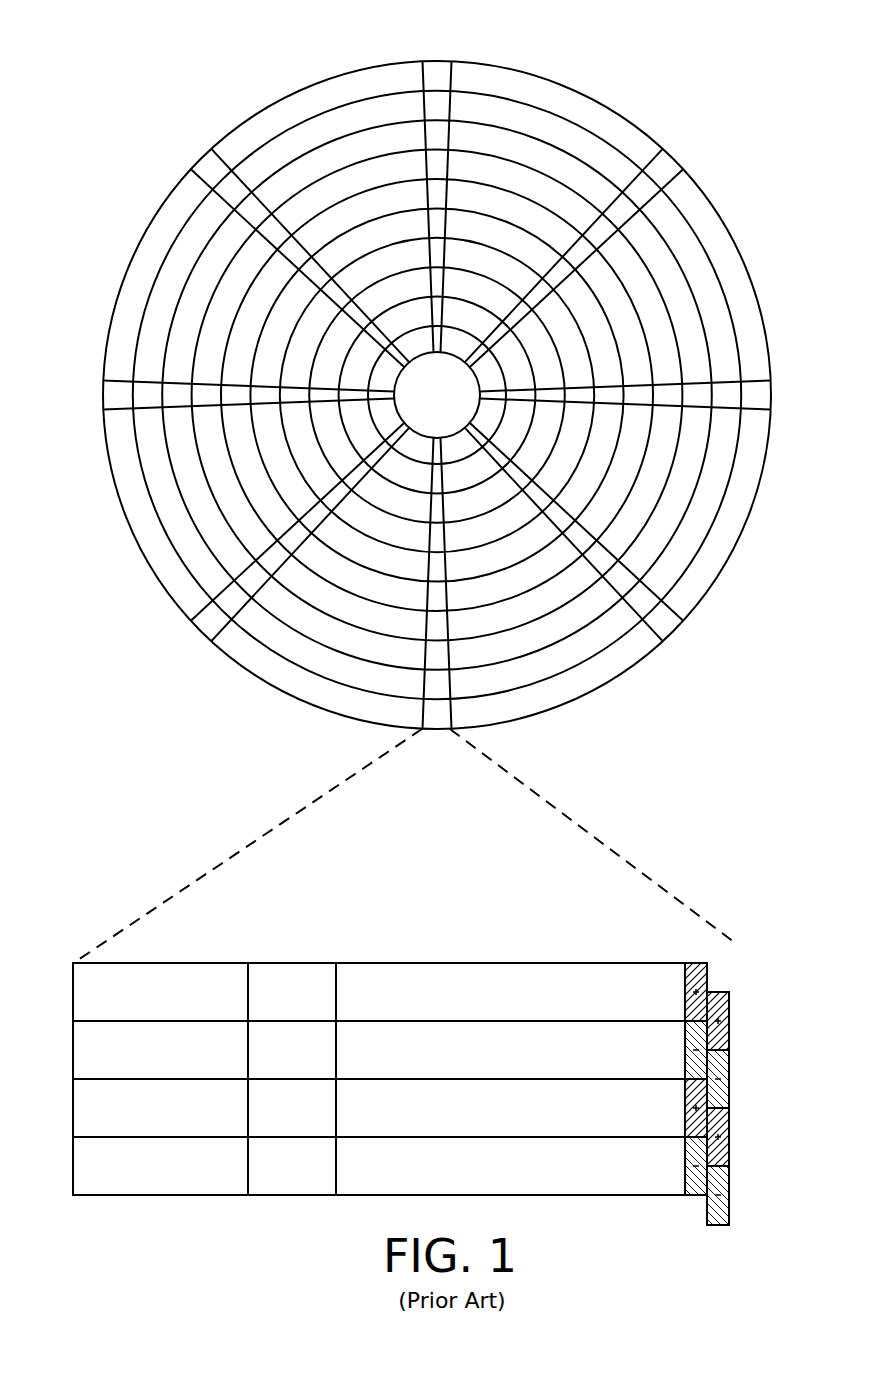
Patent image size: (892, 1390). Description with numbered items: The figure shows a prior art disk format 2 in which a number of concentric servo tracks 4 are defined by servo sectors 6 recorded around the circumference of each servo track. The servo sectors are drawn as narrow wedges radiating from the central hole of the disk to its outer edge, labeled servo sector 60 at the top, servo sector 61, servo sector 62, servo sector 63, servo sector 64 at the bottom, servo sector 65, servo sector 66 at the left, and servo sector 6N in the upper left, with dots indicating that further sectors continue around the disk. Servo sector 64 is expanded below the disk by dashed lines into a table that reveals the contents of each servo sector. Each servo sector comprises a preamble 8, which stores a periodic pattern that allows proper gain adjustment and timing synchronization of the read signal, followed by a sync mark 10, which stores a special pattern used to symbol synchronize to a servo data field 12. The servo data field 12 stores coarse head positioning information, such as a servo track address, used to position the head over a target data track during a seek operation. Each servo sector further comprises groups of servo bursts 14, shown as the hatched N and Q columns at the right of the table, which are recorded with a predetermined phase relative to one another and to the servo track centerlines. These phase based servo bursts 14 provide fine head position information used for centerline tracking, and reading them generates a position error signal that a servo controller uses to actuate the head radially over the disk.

The disk format 2 is at (188, 64).
The servo track 4 is at (552, 130).
The servo sector 6 is at (435, 409).
The servo sector 6_0 60 is at (439, 72).
The servo sector 6_1 61 is at (665, 165).
The servo sector 6_2 62 is at (763, 398).
The servo sector 6_3 63 is at (665, 622).
The servo sector 6_4 64 is at (289, 806).
The servo sector 6_5 65 is at (206, 628).
The servo sector 6_6 66 is at (108, 395).
The servo sector 6_N 6N is at (208, 166).
The preamble 8 is at (170, 963).
The sync mark 10 is at (296, 963).
The servo data field 12 is at (497, 963).
The servo bursts 14 is at (724, 961).